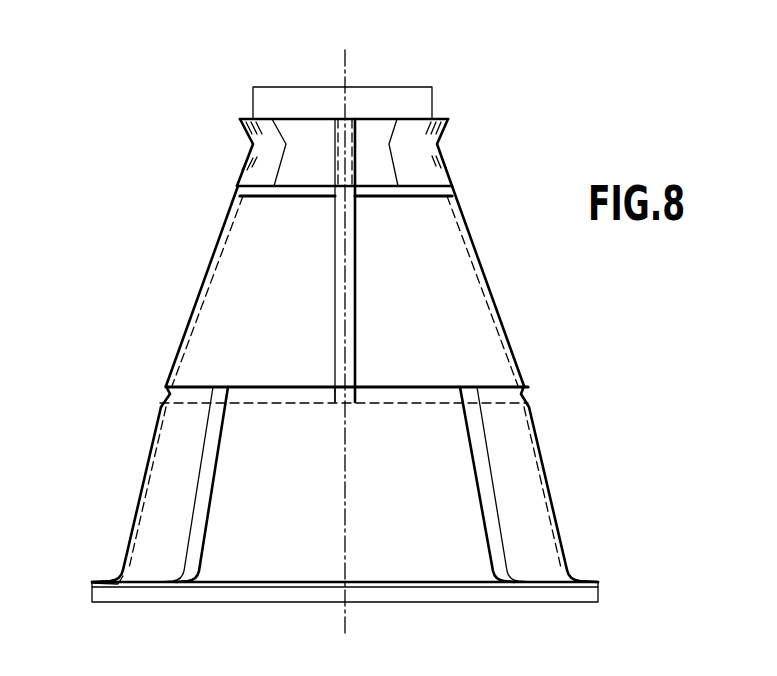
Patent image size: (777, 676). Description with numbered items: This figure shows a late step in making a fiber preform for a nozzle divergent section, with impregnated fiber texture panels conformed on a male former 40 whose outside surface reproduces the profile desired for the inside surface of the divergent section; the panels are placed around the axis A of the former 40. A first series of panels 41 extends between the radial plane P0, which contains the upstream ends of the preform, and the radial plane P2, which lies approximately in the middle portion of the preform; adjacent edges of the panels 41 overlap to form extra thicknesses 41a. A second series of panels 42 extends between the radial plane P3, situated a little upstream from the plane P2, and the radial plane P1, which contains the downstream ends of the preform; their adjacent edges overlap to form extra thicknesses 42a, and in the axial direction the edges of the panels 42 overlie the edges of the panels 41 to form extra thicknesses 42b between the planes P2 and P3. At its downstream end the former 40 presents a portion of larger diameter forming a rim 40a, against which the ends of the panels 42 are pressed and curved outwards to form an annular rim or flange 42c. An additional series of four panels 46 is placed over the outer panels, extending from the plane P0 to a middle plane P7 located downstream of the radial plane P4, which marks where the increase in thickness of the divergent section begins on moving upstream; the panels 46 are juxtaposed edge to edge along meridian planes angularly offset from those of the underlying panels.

The male former 40 is at (142, 478).
The rim 40a is at (122, 597).
The first series of panels 41 is at (240, 263).
The extra thicknesses 41a is at (358, 302).
The second series of panels 42 is at (458, 538).
The extra thicknesses 42a is at (348, 267).
The extra thicknesses 42b is at (197, 397).
The annular rim or flange 42c is at (120, 573).
The additional series of panels 46 is at (248, 162).
The radial plane P0 is at (378, 118).
The radial plane P1 is at (233, 587).
The radial plane P2 is at (283, 403).
The radial plane P3 is at (298, 385).
The radial plane P4 is at (292, 198).
The middle plane P7 is at (418, 186).
The axis A is at (347, 625).